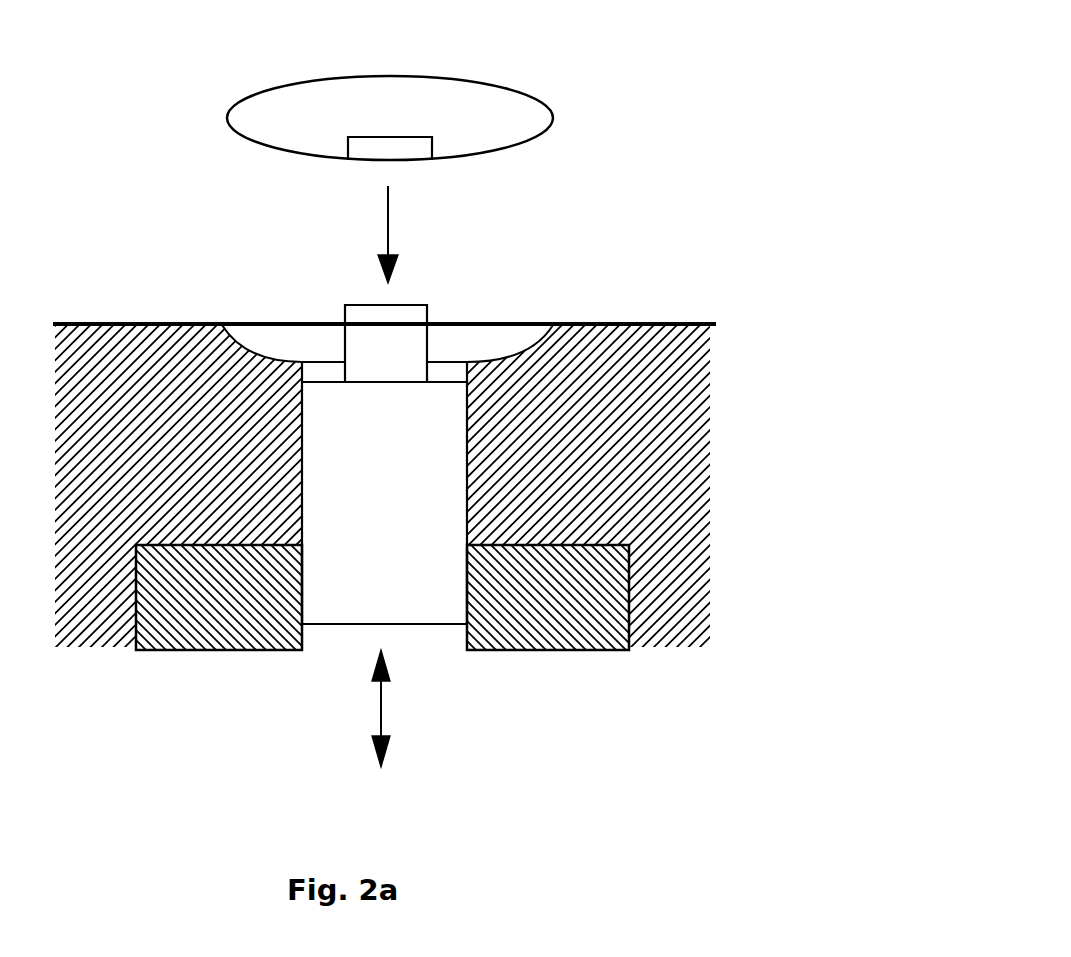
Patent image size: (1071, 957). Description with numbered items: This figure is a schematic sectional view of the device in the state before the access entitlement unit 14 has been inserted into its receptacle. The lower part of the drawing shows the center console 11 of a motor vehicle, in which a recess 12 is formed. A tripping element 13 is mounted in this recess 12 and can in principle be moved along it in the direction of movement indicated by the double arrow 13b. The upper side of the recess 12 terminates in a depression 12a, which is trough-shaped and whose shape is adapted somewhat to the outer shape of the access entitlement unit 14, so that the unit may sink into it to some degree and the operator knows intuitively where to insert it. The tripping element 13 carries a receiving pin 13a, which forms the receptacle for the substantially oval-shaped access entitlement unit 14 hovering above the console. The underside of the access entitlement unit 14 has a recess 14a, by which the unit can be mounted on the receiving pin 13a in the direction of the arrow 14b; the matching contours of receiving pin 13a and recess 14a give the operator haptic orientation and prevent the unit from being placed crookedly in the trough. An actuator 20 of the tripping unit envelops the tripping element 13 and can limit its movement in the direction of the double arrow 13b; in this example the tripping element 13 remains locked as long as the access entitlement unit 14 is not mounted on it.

The center console 11 is at (670, 520).
The recess 12 is at (447, 370).
The depression 12a is at (502, 338).
The tripping element 13 is at (407, 592).
The receiving pin 13a is at (355, 345).
The double arrow 13b is at (380, 705).
The access entitlement unit 14 is at (508, 113).
The recess 14a is at (402, 148).
The arrow 14b is at (385, 218).
The actuator 20 is at (588, 607).